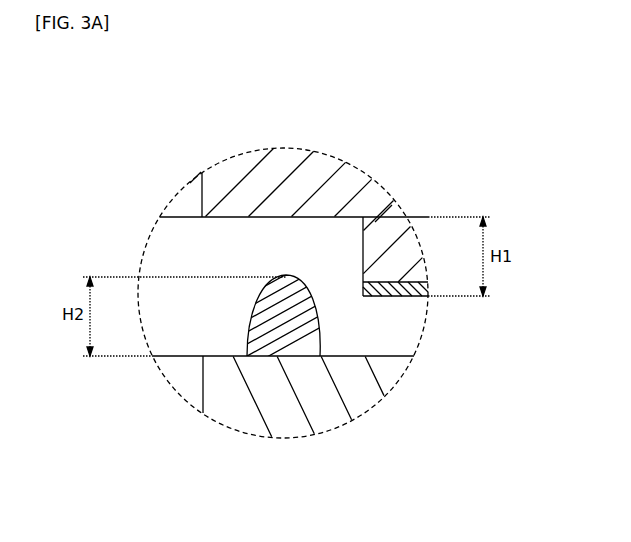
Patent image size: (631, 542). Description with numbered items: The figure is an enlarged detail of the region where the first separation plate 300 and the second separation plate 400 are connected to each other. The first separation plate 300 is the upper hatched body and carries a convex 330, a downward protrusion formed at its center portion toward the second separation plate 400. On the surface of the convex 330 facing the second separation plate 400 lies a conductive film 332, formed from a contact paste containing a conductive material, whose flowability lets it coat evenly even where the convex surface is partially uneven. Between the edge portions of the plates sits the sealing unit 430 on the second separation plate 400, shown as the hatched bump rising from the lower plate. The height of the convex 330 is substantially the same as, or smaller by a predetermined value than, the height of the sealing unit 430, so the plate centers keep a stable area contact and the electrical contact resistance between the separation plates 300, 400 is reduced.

The first separation plate 300 is at (252, 172).
The convex 330 is at (392, 240).
The conductive film 332 is at (403, 292).
The second separation plate 400 is at (322, 414).
The sealing unit 430 is at (280, 292).